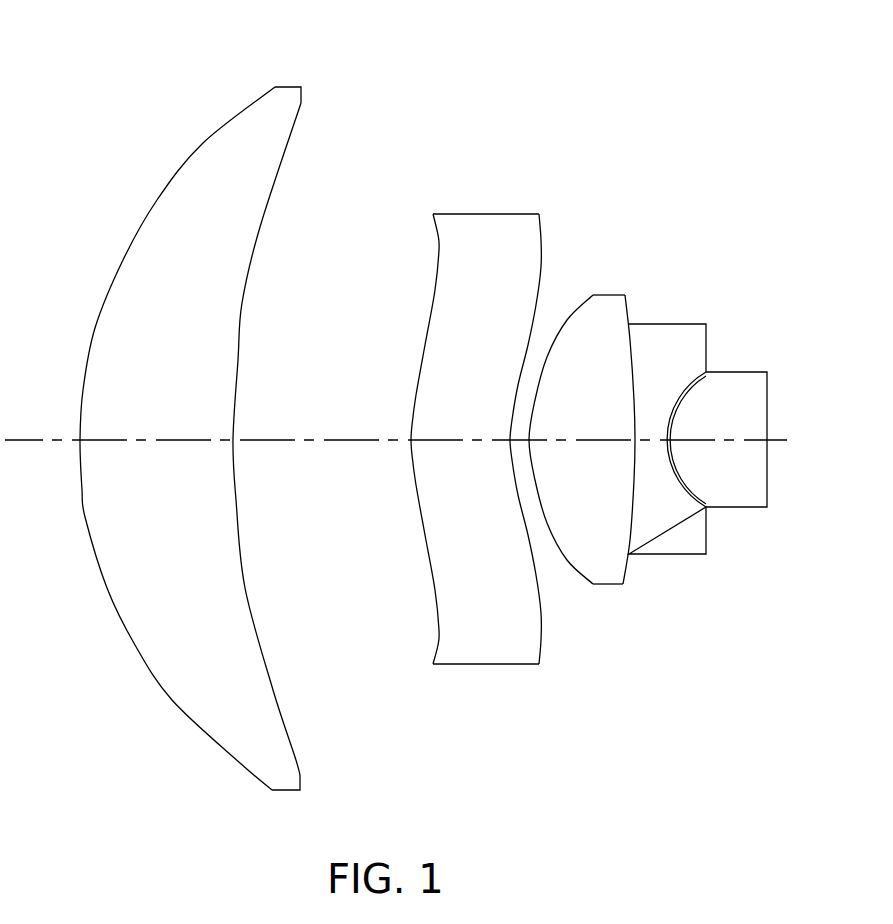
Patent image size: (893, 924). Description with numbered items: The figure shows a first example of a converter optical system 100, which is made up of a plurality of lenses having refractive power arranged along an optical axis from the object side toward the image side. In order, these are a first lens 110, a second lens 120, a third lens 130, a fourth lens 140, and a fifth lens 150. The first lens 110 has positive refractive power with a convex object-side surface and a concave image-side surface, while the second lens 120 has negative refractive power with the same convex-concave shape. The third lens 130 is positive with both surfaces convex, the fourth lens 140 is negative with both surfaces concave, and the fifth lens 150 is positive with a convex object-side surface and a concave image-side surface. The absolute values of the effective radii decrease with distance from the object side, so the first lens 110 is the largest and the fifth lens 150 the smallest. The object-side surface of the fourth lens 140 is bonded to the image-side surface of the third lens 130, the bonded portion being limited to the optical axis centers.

The converter optical system 100 is at (480, 94).
The first lens 110 is at (302, 778).
The second lens 120 is at (495, 666).
The third lens 130 is at (608, 586).
The fourth lens 140 is at (680, 555).
The fifth lens 150 is at (745, 508).